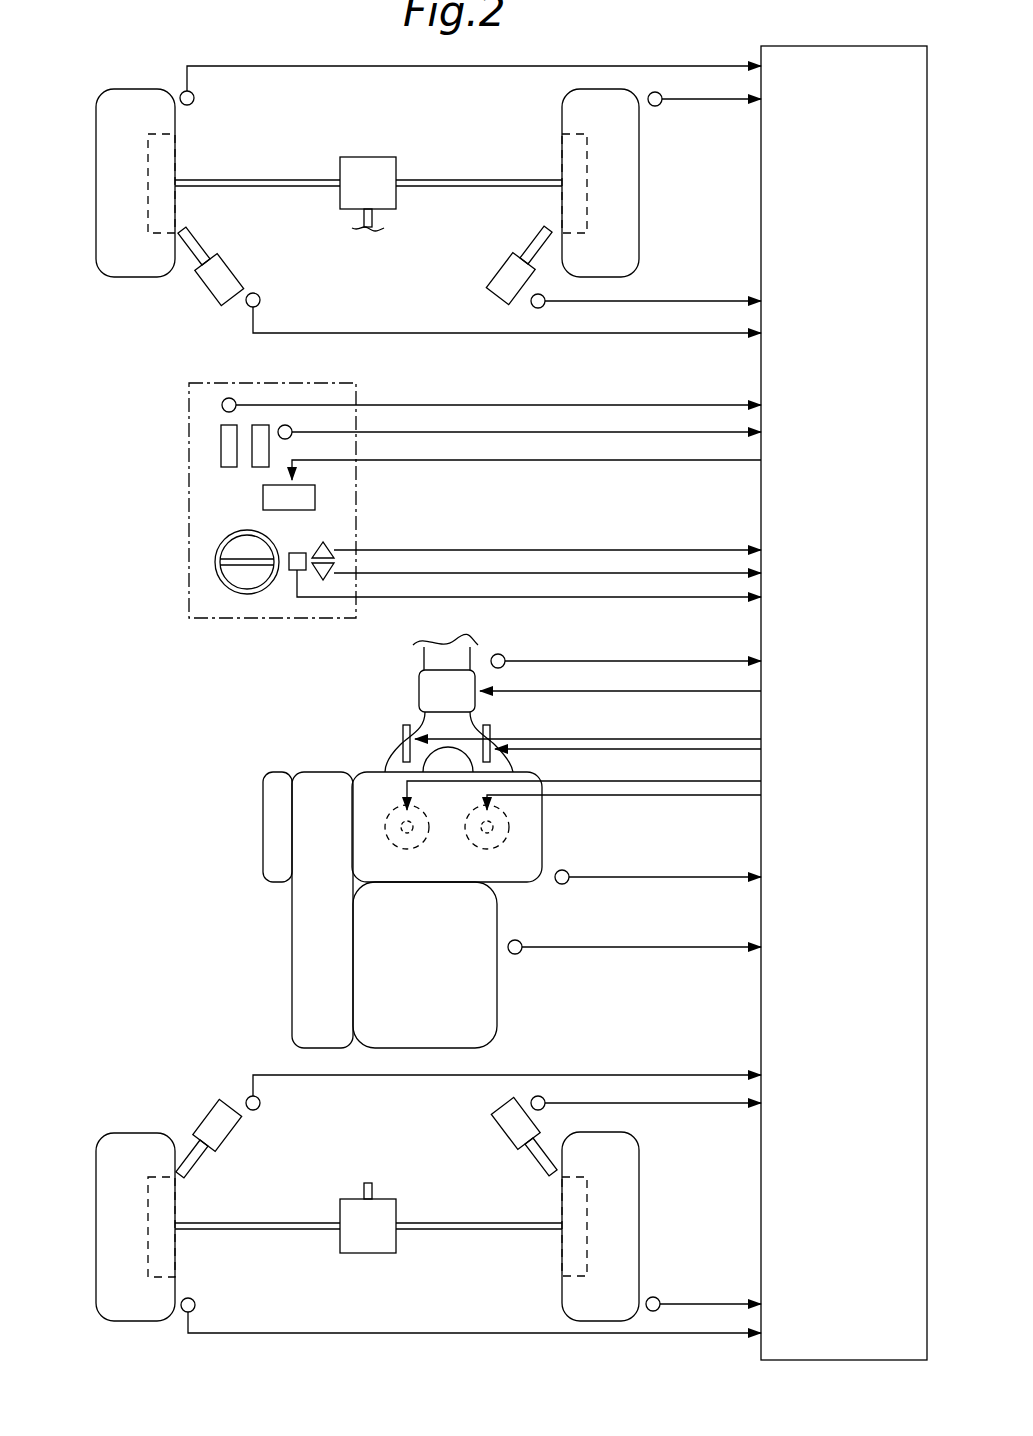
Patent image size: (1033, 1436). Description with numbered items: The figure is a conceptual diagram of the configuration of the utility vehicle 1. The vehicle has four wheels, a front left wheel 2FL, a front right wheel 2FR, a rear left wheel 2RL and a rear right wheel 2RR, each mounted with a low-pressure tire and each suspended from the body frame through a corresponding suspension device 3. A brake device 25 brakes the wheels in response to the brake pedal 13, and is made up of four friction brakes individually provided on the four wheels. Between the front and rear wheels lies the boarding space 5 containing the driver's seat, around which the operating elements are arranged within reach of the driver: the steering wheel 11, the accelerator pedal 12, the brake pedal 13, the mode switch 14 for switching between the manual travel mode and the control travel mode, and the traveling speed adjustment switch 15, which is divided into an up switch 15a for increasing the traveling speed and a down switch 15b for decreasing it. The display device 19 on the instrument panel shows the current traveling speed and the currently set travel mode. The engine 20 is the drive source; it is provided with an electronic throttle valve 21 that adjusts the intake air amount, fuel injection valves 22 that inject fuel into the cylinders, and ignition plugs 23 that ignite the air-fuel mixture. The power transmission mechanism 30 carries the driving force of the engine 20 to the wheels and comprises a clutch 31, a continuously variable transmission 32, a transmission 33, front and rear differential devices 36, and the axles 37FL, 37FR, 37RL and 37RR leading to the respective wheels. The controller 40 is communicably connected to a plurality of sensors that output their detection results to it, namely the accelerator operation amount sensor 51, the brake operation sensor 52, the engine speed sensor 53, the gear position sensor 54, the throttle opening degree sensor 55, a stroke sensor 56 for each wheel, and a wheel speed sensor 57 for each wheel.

The utility vehicle 1 is at (113, 80).
The front left wheel 2FL is at (137, 277).
The front right wheel 2FR is at (639, 250).
The rear left wheel 2RL is at (137, 1133).
The rear right wheel 2RR is at (639, 1163).
The suspension device 3 is at (222, 268).
The boarding space 5 is at (186, 600).
The steering wheel 11 is at (215, 546).
The accelerator pedal 12 is at (221, 438).
The brake pedal 13 is at (260, 467).
The mode switch 14 is at (295, 572).
The traveling speed adjustment switch 15 is at (536, 524).
The up switch 15a is at (328, 545).
The down switch 15b is at (332, 568).
The display device 19 is at (263, 500).
The engine 20 is at (542, 758).
The electronic throttle valve 21 is at (419, 682).
The fuel injection valve 22 is at (403, 733).
The ignition plug 23 is at (412, 840).
The brake device 25 is at (172, 148).
The power transmission mechanism 30 is at (480, 841).
The clutch 31 is at (264, 791).
The continuously variable transmission 32 is at (296, 831).
The transmission 33 is at (484, 911).
The differential device 36 is at (368, 1276).
The front left axle 37FL is at (310, 180).
The front right axle 37FR is at (430, 180).
The rear left axle 37RL is at (312, 1222).
The rear right axle 37RR is at (368, 1188).
The controller 40 is at (761, 213).
The accelerator operation amount sensor 51 is at (229, 398).
The brake operation sensor 52 is at (285, 425).
The engine speed sensor 53 is at (565, 870).
The gear position sensor 54 is at (517, 954).
The throttle opening degree sensor 55 is at (502, 654).
The stroke sensor 56 is at (259, 294).
The wheel speed sensor 57 is at (194, 99).